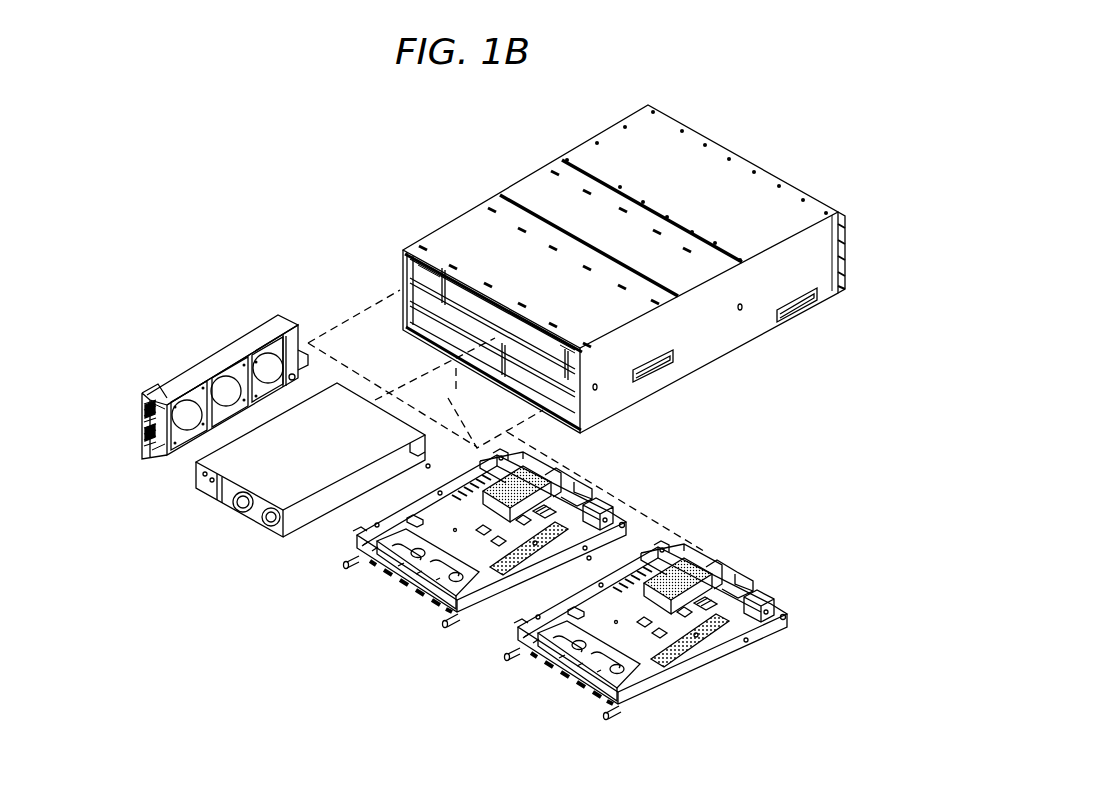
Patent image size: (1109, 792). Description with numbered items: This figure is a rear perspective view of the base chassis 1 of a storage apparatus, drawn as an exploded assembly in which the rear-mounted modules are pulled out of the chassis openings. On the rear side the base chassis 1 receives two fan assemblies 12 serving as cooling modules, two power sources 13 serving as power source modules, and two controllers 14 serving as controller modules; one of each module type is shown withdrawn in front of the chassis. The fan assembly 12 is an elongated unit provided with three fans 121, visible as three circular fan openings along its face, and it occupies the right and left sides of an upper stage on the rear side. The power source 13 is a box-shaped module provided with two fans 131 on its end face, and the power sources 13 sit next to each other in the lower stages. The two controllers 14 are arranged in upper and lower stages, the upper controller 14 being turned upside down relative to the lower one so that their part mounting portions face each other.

The base chassis 1 is at (752, 160).
The fan assembly 12 is at (248, 338).
The fan 121 is at (185, 415).
The power source 13 is at (223, 462).
The fan 131 is at (234, 510).
The controller 14 is at (410, 560).